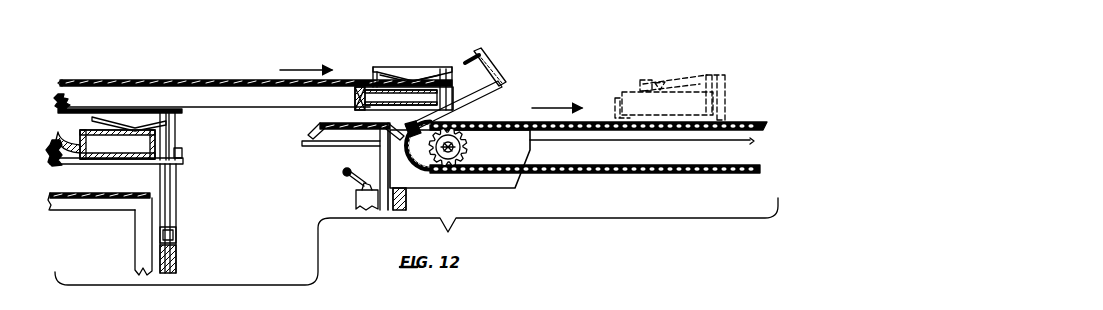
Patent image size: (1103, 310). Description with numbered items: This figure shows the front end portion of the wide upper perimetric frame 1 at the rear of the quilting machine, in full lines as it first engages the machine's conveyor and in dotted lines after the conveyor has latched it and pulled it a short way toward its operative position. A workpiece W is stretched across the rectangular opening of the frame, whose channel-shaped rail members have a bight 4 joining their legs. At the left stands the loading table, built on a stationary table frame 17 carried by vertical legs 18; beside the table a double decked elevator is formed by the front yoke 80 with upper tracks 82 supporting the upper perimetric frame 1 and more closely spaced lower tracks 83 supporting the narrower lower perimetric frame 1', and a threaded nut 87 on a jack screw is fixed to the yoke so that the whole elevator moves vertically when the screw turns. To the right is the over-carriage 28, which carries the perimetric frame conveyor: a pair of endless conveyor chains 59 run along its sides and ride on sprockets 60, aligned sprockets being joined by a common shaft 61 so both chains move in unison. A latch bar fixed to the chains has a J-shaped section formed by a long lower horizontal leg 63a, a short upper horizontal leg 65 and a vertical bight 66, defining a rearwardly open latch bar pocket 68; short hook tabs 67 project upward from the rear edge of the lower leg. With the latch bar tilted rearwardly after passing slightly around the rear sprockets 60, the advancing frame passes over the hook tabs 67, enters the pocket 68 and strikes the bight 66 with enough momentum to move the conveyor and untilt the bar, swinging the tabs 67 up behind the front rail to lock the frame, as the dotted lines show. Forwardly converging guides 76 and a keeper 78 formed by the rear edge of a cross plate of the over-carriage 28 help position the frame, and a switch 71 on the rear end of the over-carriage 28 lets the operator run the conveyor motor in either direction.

The upper perimetric frame 1 is at (255, 76).
The workpiece W is at (256, 79).
The upper tracks 82 is at (54, 104).
The lower perimetric frame 1' is at (141, 136).
The front yoke 80 is at (180, 126).
The lower tracks 83 is at (49, 167).
The threaded sleeve or nut 87 is at (178, 262).
The table frame 17 is at (95, 206).
The vertical legs 18 is at (143, 252).
The bight 4 is at (363, 111).
The horns or guides 76 is at (303, 146).
The keeper 78 is at (350, 130).
The switch 71 is at (356, 197).
The over-carriage 28 is at (421, 180).
The hook tabs 67 is at (421, 131).
The endless conveyor chains 59 is at (571, 175).
The sprockets 60 is at (469, 148).
The common shaft 61 is at (436, 155).
The long lower horizontal leg 63a is at (480, 97).
The vertical bight 66 is at (485, 60).
The short upper horizontal leg 65 is at (466, 58).
The latch bar pocket 68 is at (476, 85).